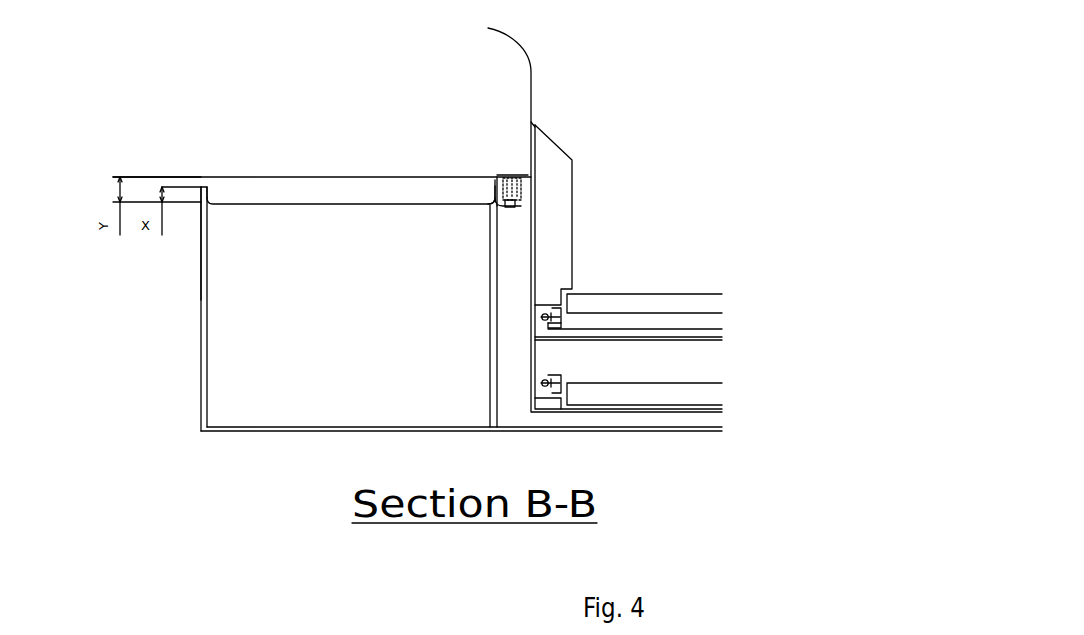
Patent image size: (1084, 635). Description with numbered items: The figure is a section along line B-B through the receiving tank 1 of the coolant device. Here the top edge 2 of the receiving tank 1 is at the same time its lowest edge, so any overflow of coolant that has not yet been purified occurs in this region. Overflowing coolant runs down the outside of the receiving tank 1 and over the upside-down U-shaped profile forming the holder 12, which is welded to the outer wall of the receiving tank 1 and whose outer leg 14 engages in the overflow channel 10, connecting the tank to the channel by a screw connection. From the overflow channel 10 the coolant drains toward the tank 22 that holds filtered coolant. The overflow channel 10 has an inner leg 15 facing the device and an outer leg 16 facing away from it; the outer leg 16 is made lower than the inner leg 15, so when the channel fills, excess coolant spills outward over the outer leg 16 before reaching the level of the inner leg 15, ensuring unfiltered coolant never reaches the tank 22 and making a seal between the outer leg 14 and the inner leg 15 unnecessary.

The receiving tank 1 is at (648, 250).
The top edge 2 is at (578, 211).
The overflow channel 10 is at (276, 194).
The holder 12 is at (510, 176).
The outer leg 14 is at (489, 196).
The inner leg 15 is at (497, 177).
The outer leg 16 is at (207, 184).
The tank 22 is at (291, 386).